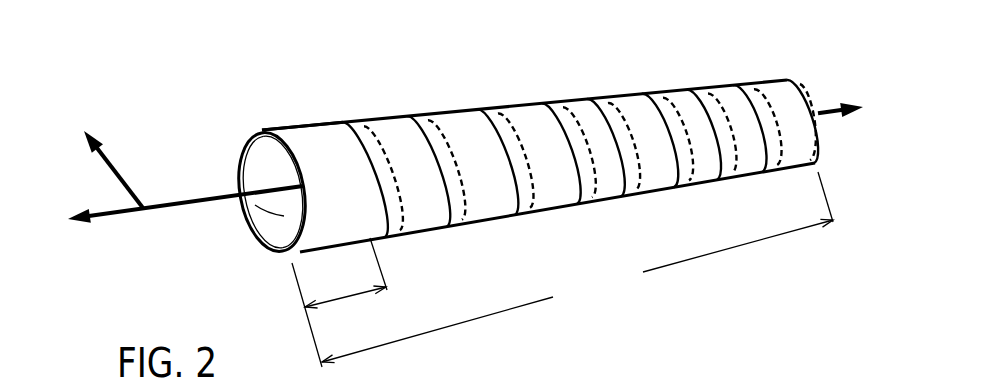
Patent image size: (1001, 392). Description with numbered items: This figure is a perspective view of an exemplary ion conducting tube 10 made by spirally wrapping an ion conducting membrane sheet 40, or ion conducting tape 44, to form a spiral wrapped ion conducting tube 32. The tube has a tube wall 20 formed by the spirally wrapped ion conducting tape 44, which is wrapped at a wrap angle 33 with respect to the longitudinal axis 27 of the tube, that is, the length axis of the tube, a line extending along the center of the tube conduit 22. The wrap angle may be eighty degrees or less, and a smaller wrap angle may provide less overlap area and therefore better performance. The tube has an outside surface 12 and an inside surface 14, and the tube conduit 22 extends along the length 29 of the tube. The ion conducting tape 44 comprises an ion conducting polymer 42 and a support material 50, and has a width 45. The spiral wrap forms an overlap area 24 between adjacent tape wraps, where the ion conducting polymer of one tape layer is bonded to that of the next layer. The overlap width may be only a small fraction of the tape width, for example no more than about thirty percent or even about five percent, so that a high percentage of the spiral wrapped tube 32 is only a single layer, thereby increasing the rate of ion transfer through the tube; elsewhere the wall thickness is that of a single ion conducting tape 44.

The ion conducting tube 10 is at (803, 70).
The outside surface 12 is at (273, 128).
The inside surface 14 is at (287, 214).
The tube wall 20 is at (241, 178).
The tube conduit 22 is at (262, 203).
The overlap area 24 is at (356, 145).
The longitudinal axis 27 is at (175, 196).
The length 29 is at (562, 269).
The spiral wrapped ion conducting tube 32 is at (746, 74).
The wrap angle 33 is at (112, 184).
The ion conducting membrane sheet 40 is at (468, 127).
The ion conducting polymer 42 is at (532, 127).
The ion conducting tape 44 is at (310, 140).
The width 45 is at (346, 292).
The support material 50 is at (637, 110).